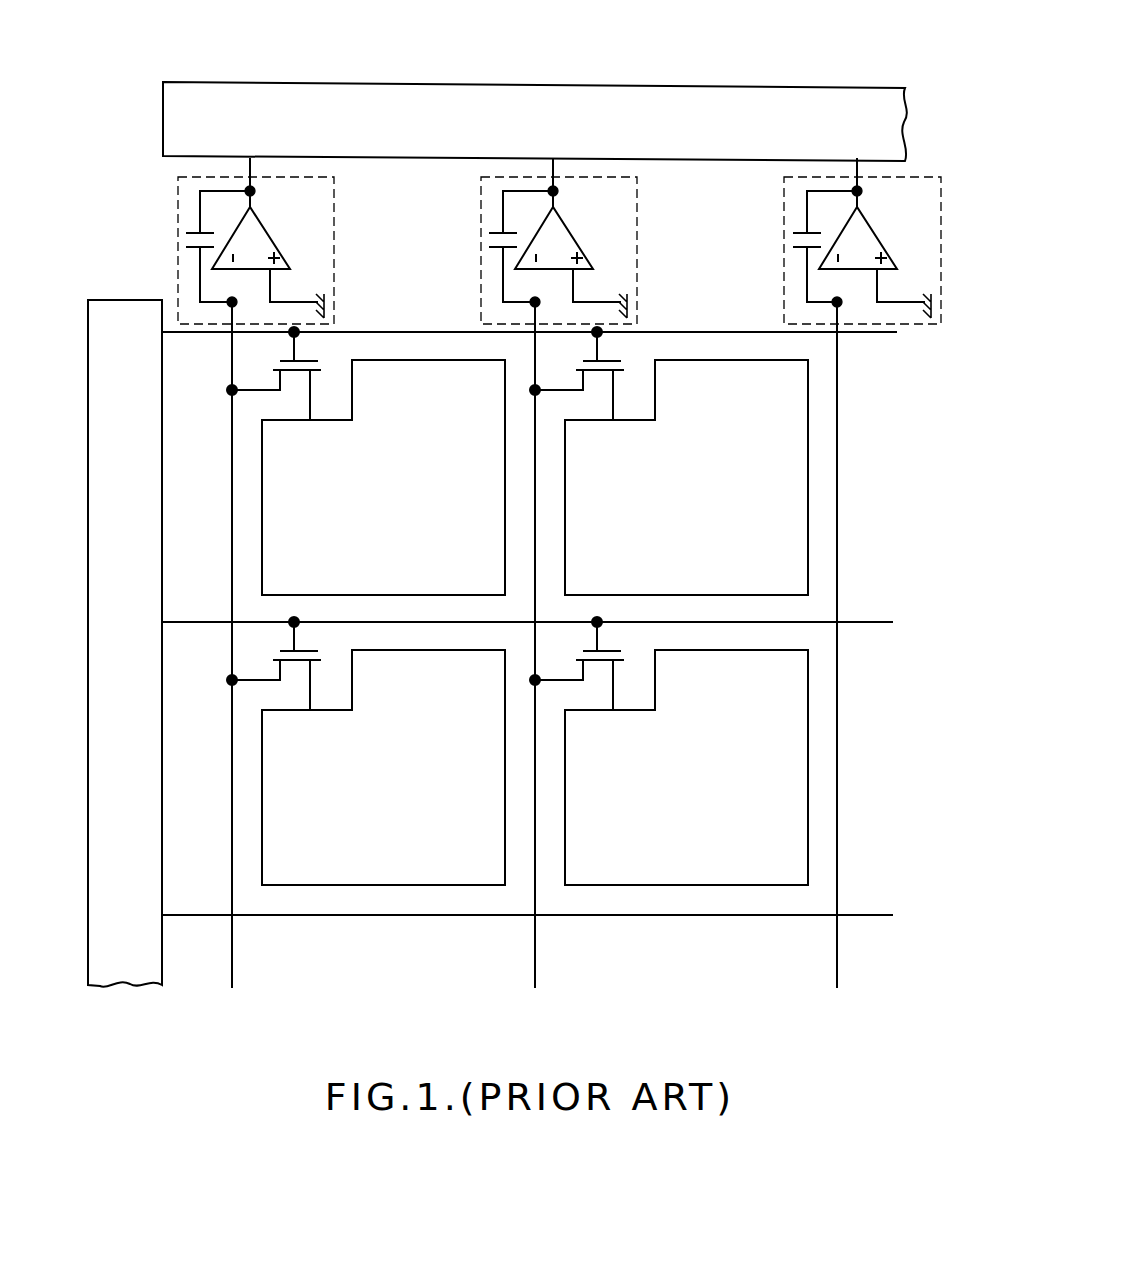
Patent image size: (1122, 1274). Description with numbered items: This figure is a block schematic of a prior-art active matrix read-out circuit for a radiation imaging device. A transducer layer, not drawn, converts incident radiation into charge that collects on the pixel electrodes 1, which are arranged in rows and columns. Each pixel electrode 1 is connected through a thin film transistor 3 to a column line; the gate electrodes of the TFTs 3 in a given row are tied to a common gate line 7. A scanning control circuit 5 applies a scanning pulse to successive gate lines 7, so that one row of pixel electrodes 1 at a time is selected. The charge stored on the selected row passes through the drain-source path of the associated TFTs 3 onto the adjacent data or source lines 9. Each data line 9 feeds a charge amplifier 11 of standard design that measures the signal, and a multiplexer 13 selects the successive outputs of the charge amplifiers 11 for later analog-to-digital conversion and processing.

The pixel electrode 1 is at (462, 378).
The thin film transistor 3 is at (300, 361).
The scanning control circuit 5 is at (100, 393).
The gate line 7 is at (862, 336).
The data line 9 is at (232, 970).
The charge amplifier 11 is at (178, 236).
The multiplexer 13 is at (735, 95).